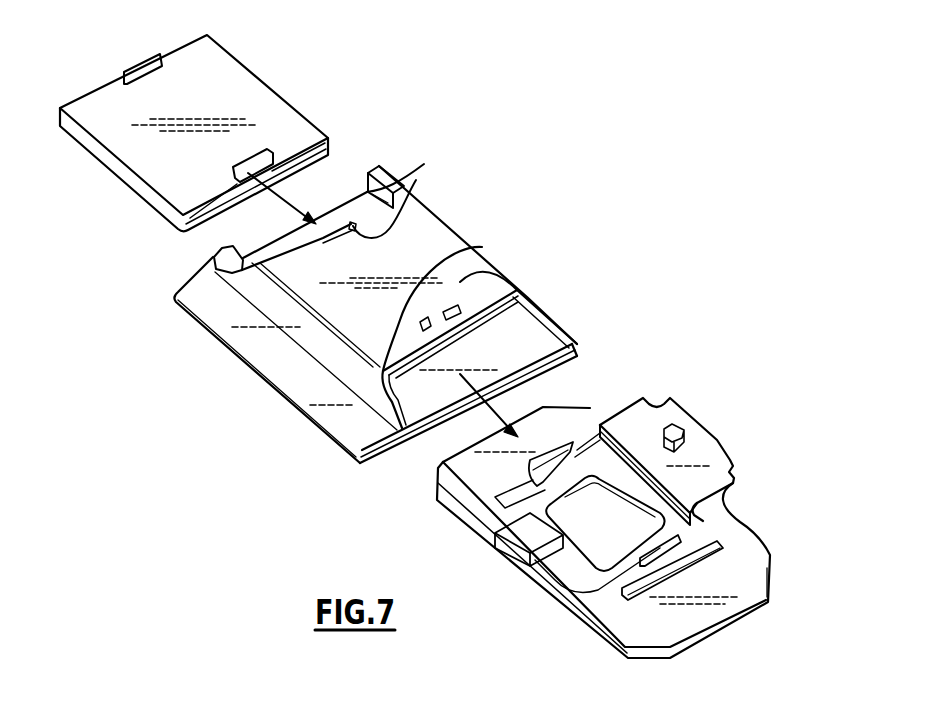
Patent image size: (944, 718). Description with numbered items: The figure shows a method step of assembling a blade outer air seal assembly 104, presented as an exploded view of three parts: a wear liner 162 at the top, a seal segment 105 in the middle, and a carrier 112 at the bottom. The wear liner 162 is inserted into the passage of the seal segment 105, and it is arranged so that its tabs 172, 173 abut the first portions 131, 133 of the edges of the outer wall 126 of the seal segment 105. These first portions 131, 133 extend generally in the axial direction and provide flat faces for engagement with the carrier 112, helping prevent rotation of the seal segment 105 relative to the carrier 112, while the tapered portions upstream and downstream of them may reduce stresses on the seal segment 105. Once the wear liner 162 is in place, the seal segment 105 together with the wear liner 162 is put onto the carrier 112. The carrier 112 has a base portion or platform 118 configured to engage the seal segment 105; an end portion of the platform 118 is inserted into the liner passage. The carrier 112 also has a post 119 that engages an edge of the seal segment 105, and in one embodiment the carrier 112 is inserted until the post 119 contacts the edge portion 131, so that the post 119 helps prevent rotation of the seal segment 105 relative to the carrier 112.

The BOAS assembly 104 is at (575, 93).
The wear liner 162 is at (260, 80).
The tab 173 is at (147, 55).
The tab 172 is at (270, 160).
The seal segment 105 is at (453, 223).
The outer wall 126 is at (415, 237).
The first portion 133 is at (424, 164).
The first portion 131 is at (482, 247).
The carrier 112 is at (756, 538).
The platform 118 is at (588, 419).
The post 119 is at (560, 470).